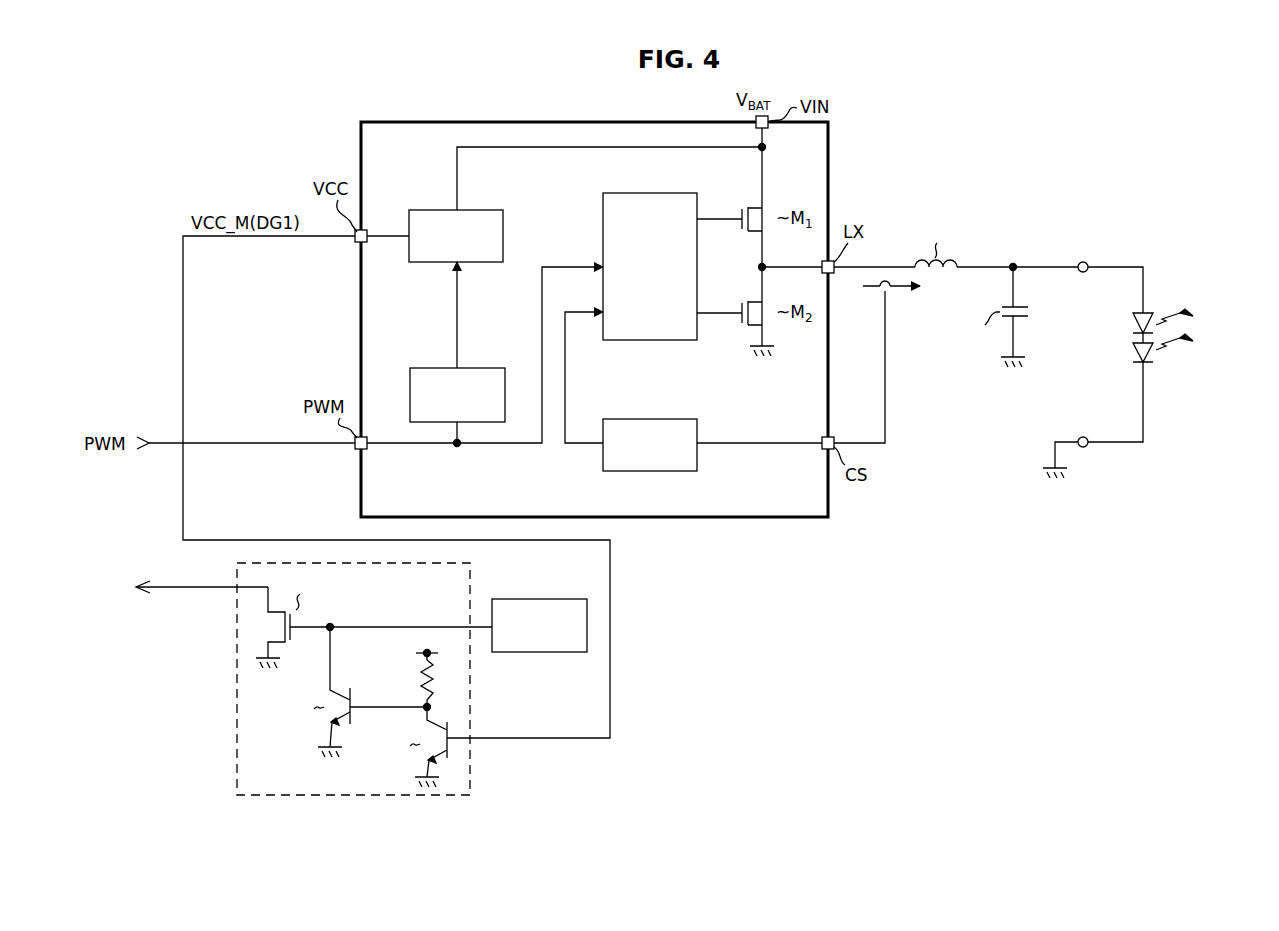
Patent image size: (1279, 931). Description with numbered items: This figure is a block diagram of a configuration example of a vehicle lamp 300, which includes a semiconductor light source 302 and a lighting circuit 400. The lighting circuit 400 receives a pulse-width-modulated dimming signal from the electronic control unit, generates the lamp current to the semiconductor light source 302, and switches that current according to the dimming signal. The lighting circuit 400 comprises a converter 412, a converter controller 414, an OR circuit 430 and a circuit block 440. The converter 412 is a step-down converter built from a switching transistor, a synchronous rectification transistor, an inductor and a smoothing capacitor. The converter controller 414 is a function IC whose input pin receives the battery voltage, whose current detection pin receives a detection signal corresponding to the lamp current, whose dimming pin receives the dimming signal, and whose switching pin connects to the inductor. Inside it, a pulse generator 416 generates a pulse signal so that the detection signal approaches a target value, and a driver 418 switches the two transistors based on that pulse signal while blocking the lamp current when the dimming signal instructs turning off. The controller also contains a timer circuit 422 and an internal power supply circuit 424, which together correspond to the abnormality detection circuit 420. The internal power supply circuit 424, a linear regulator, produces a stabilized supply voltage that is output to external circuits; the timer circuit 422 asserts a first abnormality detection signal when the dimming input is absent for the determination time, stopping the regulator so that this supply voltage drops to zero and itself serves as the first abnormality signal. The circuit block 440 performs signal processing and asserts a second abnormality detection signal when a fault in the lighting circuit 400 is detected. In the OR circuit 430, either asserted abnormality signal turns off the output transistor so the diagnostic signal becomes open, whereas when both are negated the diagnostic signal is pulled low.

The vehicle lamp 300 is at (1202, 128).
The semiconductor light source 302 is at (1160, 314).
The lighting circuit 400 is at (158, 803).
The converter 412 is at (723, 367).
The converter controller 414 is at (791, 518).
The pulse generator 416 is at (668, 419).
The driver 418 is at (668, 194).
The abnormality detection circuit 420 is at (390, 459).
The timer circuit 422 is at (428, 368).
The internal power supply circuit 424 is at (486, 212).
The OR circuit 430 is at (470, 778).
The circuit block 440 is at (556, 599).